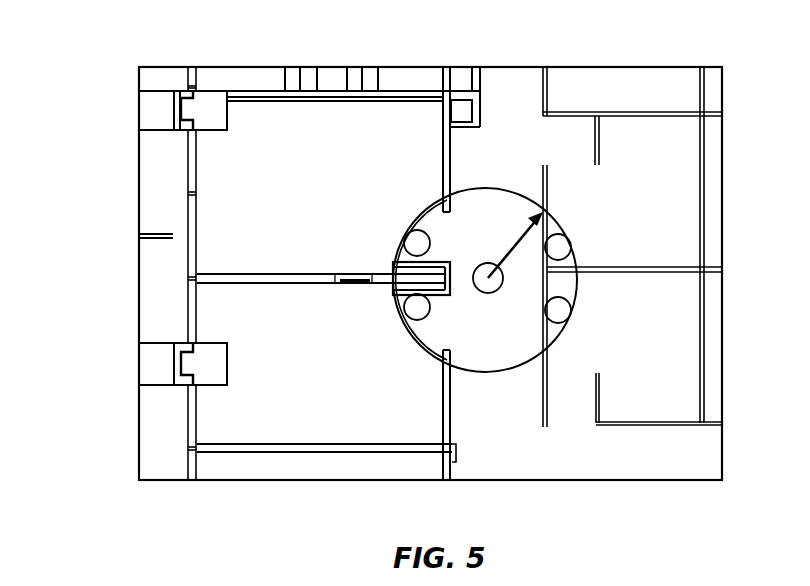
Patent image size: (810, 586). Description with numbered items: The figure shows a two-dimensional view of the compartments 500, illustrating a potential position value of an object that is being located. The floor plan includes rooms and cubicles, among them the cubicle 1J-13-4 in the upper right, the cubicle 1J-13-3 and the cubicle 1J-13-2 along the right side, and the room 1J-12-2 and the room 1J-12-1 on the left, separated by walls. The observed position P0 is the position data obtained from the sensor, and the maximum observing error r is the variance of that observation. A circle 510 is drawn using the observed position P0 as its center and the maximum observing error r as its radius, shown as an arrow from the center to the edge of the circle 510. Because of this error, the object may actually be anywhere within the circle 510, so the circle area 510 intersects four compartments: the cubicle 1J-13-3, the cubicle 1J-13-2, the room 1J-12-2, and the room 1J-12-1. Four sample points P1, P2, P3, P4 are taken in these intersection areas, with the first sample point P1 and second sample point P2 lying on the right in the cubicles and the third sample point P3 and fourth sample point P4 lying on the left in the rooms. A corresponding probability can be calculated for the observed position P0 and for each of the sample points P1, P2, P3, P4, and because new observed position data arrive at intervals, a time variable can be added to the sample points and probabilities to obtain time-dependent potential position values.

The compartments 500 is at (140, 50).
The circle 510 is at (505, 171).
The observed position P0 is at (488, 298).
The first sample point P1 is at (581, 224).
The second sample point P2 is at (581, 313).
The third sample point P3 is at (390, 233).
The fourth sample point P4 is at (390, 311).
The maximum observing error r is at (515, 244).
The room 1J-12-1 is at (320, 363).
The room 1J-12-2 is at (320, 187).
The cubicle 1J-13-2 is at (623, 347).
The cubicle 1J-13-3 is at (623, 191).
The cubicle 1J-13-4 is at (623, 89).